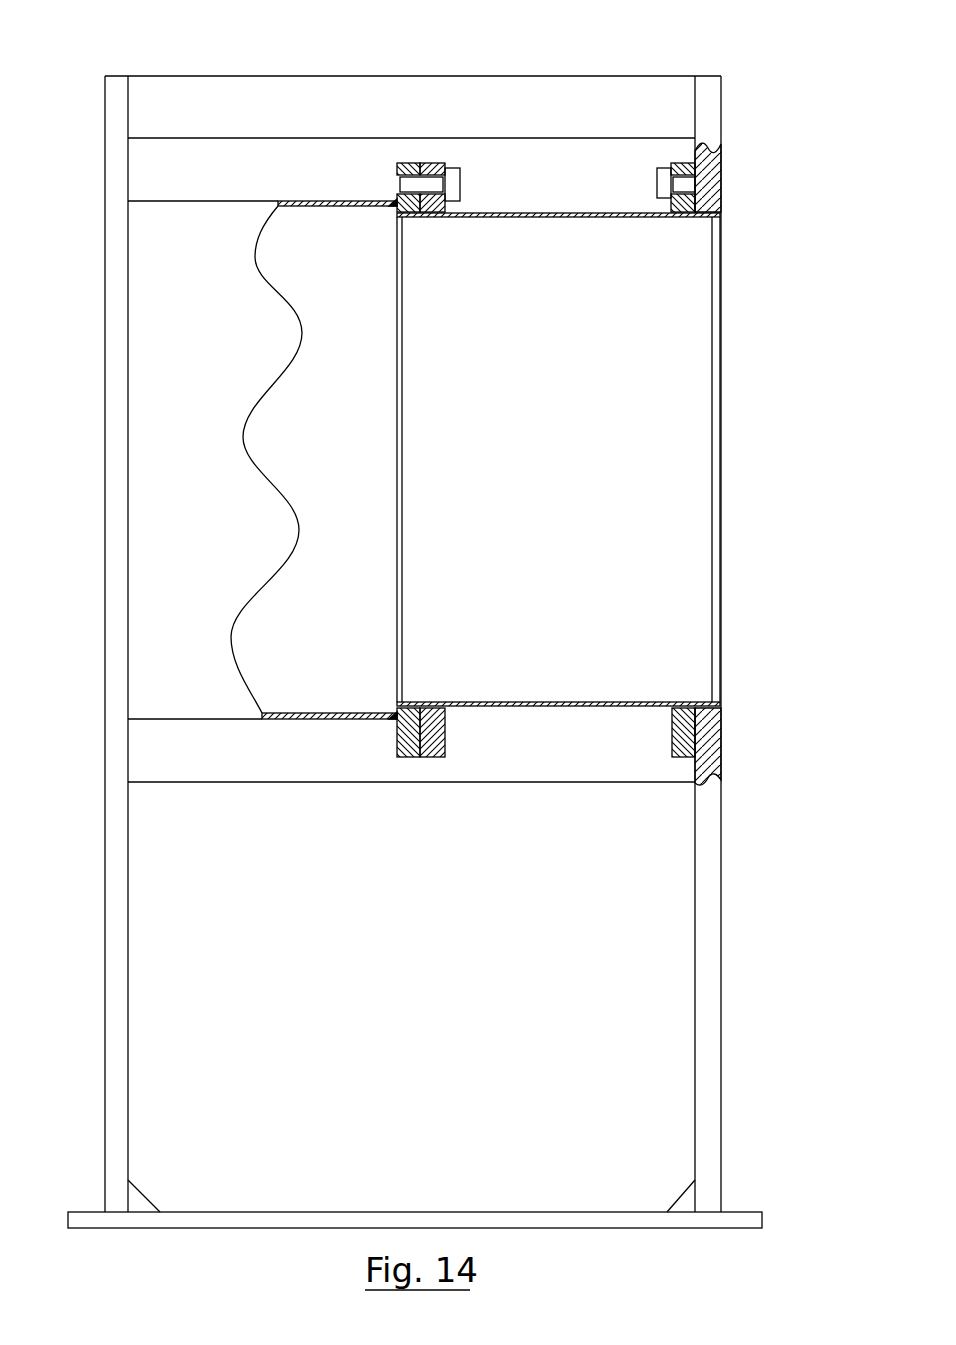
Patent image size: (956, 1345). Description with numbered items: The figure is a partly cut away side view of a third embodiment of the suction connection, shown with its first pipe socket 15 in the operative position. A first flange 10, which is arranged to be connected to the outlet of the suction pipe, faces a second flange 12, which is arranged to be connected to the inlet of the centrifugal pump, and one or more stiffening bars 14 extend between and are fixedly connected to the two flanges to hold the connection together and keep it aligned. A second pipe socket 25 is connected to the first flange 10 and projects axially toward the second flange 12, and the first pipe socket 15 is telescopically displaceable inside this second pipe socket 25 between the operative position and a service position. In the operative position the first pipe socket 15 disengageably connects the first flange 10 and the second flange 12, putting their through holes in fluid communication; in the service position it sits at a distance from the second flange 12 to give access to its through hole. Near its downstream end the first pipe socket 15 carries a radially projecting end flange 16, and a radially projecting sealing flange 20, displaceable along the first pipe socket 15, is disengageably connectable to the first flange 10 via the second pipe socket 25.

The first flange 10 is at (115, 92).
The second flange 12 is at (710, 92).
The stiffening bar 14 is at (414, 94).
The first pipe socket 15 is at (557, 683).
The end flange 16 is at (682, 217).
The sealing flange 20 is at (440, 217).
The second pipe socket 25 is at (197, 685).